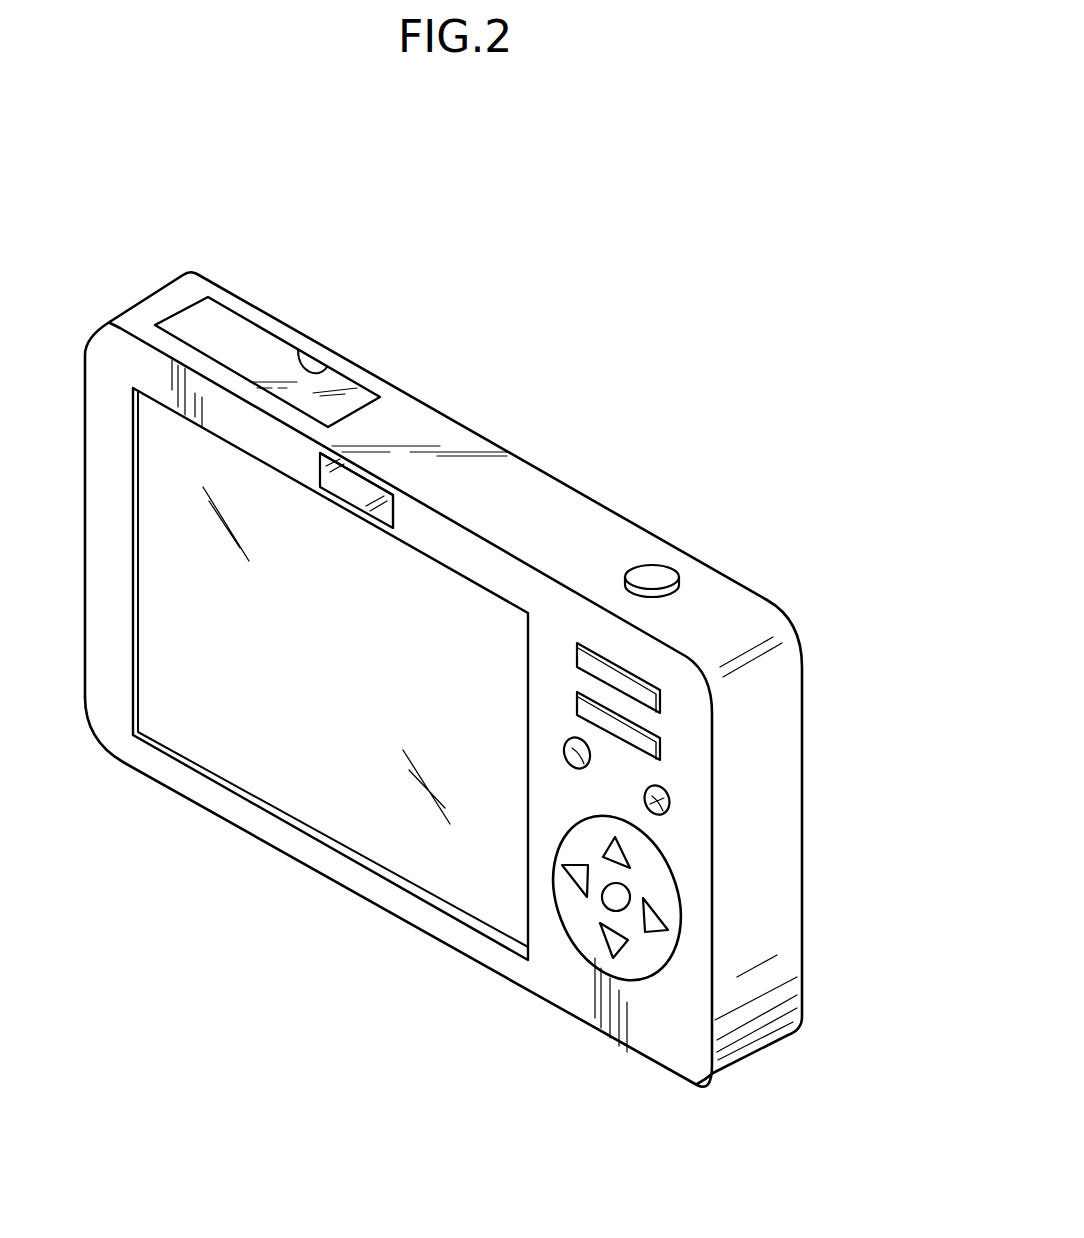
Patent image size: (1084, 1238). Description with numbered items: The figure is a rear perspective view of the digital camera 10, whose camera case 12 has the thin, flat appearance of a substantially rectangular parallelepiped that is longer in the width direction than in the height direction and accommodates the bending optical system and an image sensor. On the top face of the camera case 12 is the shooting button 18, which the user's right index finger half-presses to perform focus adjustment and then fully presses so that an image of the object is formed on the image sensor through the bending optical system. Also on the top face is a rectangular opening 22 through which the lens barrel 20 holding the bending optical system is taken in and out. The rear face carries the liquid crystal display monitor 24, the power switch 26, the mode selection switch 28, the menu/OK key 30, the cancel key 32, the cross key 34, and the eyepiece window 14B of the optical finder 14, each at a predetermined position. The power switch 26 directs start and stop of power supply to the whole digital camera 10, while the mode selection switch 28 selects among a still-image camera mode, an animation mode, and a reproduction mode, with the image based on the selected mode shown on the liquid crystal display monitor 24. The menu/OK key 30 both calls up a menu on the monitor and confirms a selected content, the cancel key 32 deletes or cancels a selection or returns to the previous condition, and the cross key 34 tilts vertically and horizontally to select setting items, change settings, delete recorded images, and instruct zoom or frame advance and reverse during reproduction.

The digital camera 10 is at (548, 412).
The camera case 12 is at (498, 572).
The optical finder 14 is at (347, 505).
The eyepiece window 14B is at (355, 490).
The shooting button 18 is at (650, 570).
The lens barrel 20 is at (229, 349).
The opening 22 is at (326, 373).
The liquid crystal display monitor 24 is at (270, 748).
The power switch 26 is at (660, 700).
The mode selection switch 28 is at (663, 757).
The menu/OK key 30 is at (670, 803).
The cancel key 32 is at (565, 754).
The cross key 34 is at (650, 883).